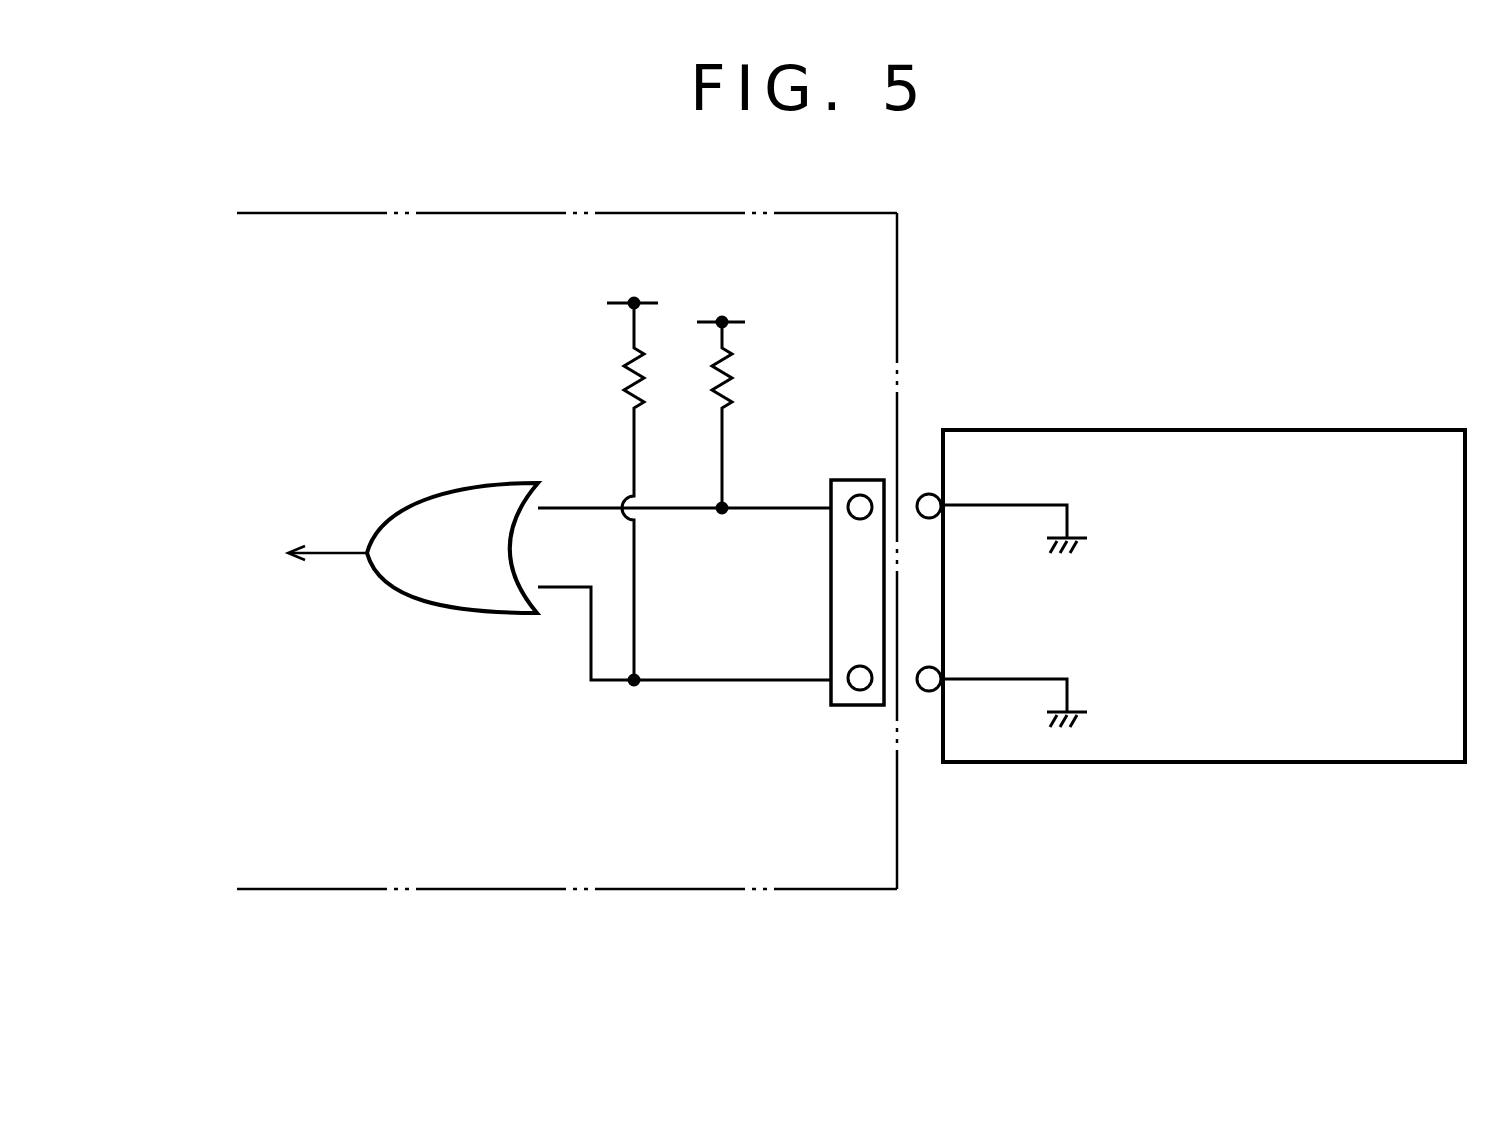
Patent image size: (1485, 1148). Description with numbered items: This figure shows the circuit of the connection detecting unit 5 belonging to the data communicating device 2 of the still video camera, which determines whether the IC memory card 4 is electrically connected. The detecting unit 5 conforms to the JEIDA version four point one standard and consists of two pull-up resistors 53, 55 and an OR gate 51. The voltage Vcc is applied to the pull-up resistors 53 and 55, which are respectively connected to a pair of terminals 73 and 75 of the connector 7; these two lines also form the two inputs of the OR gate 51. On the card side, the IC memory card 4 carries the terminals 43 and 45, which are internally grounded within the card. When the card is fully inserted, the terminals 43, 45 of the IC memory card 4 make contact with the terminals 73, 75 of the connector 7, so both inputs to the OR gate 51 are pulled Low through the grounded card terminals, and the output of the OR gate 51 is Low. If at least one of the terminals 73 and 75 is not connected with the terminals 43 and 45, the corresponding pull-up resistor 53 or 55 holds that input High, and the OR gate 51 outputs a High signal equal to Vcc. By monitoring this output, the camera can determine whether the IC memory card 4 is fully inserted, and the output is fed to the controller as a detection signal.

The data communicating device 2 is at (570, 889).
The IC memory card 4 is at (1262, 758).
The connection detecting unit 5 is at (572, 338).
The connector 7 is at (831, 593).
The terminal 43 is at (930, 692).
The terminal 45 is at (928, 494).
The OR gate 51 is at (460, 605).
The pull-up resistor 53 is at (630, 380).
The pull-up resistor 55 is at (727, 376).
The terminal 73 is at (858, 690).
The terminal 75 is at (858, 495).